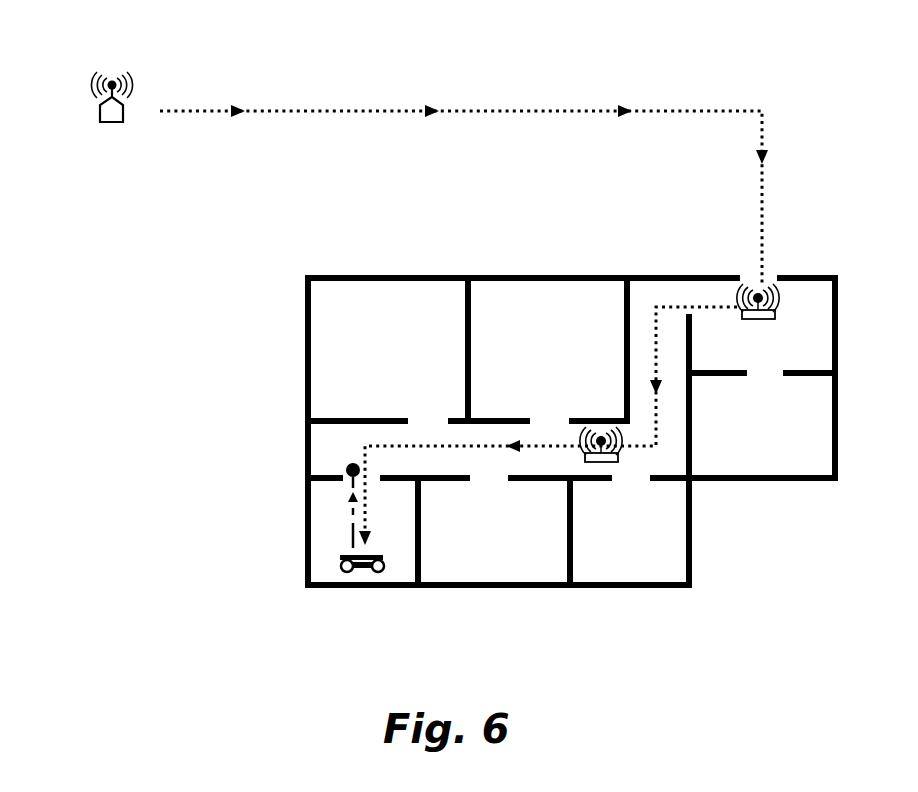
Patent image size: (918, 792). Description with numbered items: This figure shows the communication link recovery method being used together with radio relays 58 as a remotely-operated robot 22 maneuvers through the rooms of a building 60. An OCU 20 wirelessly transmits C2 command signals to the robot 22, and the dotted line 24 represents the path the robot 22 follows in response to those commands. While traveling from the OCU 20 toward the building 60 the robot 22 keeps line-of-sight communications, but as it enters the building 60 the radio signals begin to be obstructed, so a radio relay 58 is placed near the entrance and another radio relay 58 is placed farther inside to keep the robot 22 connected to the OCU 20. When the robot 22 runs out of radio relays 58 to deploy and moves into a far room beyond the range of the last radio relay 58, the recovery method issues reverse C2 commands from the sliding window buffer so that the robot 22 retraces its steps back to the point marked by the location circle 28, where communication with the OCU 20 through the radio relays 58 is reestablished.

The OCU 20 is at (100, 122).
The robot 22 is at (378, 572).
The dotted line 24 is at (568, 110).
The location circle 28 is at (346, 468).
The radio relay 58 is at (760, 322).
The building 60 is at (740, 481).